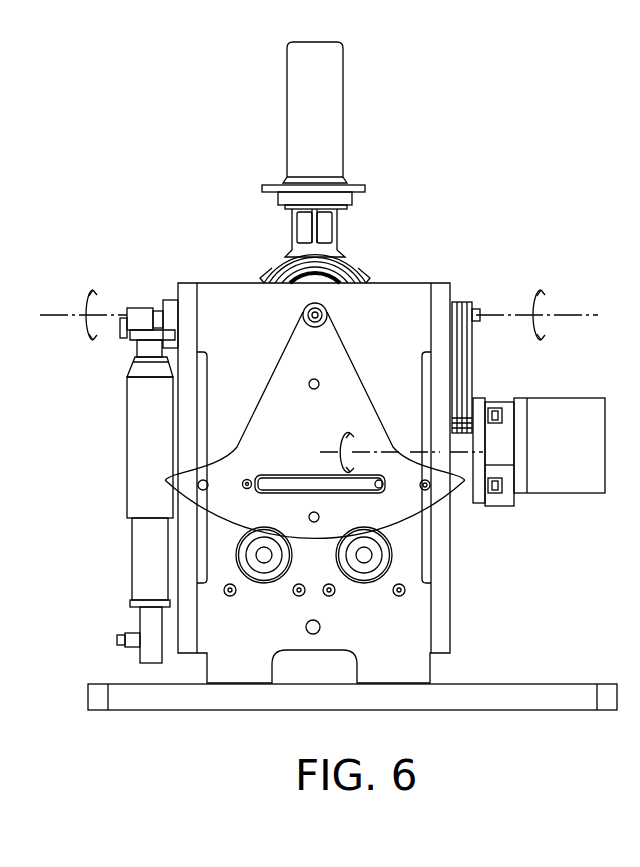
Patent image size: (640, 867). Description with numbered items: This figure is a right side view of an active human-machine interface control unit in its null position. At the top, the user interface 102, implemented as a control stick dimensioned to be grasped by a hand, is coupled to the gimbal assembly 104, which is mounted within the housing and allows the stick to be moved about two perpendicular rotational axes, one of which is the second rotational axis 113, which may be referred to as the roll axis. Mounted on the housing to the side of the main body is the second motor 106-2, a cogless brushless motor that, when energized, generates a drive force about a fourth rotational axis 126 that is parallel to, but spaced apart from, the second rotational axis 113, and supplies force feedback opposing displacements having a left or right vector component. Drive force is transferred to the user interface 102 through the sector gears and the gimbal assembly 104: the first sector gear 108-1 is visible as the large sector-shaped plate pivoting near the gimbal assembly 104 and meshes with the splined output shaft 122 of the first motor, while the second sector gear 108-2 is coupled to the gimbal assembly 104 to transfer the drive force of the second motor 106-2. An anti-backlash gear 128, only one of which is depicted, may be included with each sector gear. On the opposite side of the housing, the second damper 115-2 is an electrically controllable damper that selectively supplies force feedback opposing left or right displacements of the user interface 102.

The user interface 102 is at (345, 118).
The gimbal assembly 104 is at (363, 280).
The first sector gear 108-1 is at (346, 421).
The second sector gear 108-2 is at (480, 383).
The second rotational axis 113 is at (48, 315).
The second damper 115-2 is at (130, 450).
The fourth rotational axis 126 is at (371, 452).
The second motor 106-2 is at (550, 493).
The anti-backlash gear 128 is at (264, 583).
The splined output shaft 122 is at (364, 583).